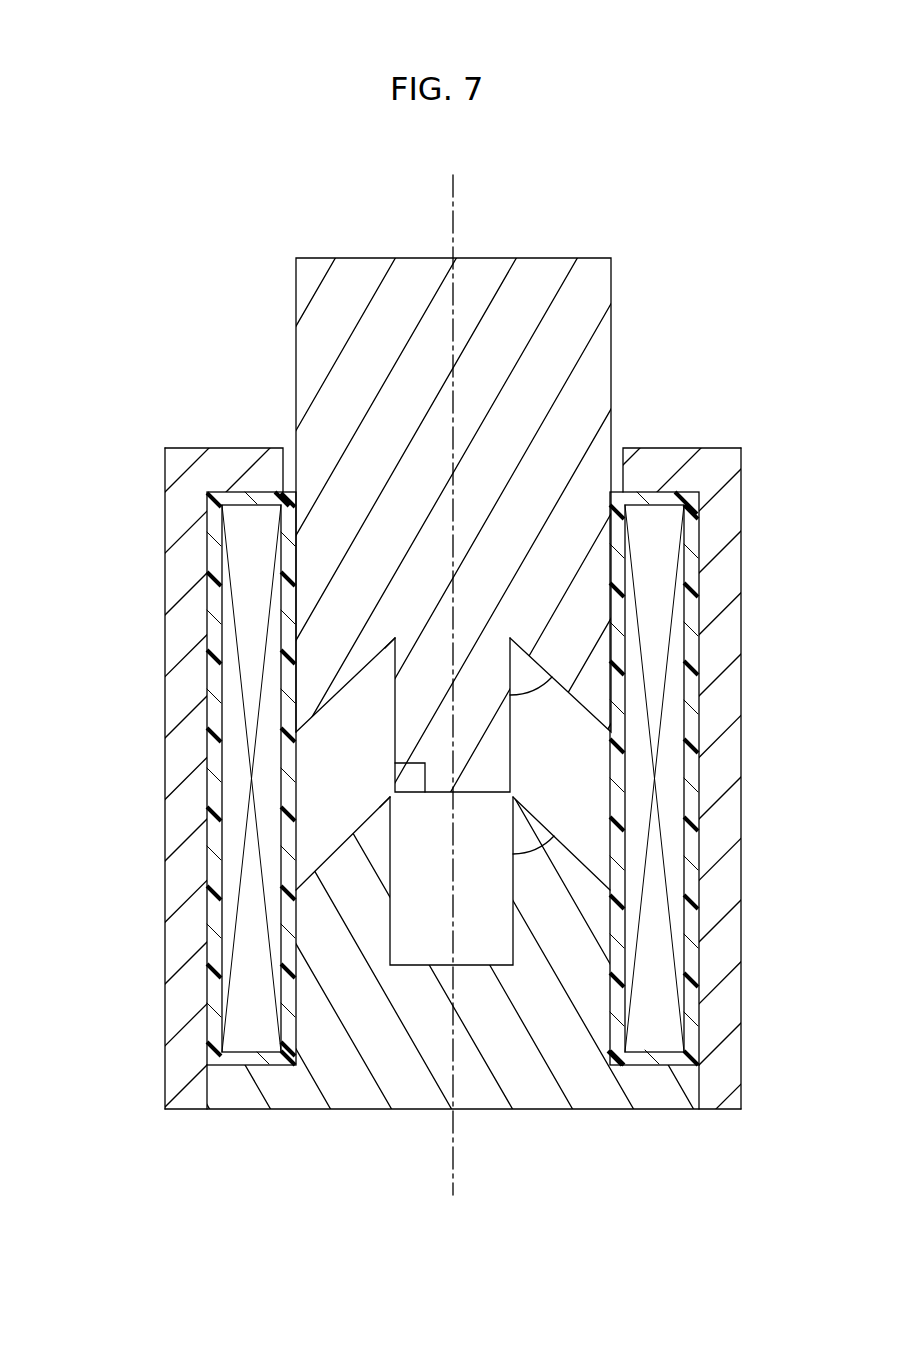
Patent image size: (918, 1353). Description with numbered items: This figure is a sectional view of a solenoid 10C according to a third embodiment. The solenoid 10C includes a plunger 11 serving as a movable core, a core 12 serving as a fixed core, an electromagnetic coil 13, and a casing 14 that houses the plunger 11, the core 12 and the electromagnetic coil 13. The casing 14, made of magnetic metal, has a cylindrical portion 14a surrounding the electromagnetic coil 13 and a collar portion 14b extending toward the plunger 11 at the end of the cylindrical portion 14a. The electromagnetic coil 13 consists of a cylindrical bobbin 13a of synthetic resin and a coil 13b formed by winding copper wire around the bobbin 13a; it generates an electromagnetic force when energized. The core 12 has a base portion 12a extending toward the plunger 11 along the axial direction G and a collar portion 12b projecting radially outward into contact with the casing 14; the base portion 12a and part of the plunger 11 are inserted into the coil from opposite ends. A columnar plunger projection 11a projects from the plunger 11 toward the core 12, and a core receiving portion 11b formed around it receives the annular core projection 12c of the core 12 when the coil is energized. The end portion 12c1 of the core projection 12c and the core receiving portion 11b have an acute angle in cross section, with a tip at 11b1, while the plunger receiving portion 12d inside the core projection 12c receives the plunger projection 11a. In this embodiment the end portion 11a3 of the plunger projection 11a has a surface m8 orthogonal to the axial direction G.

The solenoid 10C is at (676, 173).
The axial direction G is at (457, 212).
The plunger 11 is at (618, 338).
The plunger projection 11a is at (472, 682).
The end portion of the plunger projection 11a3 is at (485, 767).
The core receiving portion 11b is at (347, 745).
The tip of inclined portion 11b1 is at (365, 672).
The surface m8 is at (480, 793).
The core 12 is at (605, 1121).
The base portion 12a is at (362, 1017).
The collar portion 12b is at (243, 1093).
The core projection 12c is at (350, 877).
The end portion of the core projection 12c1 is at (382, 817).
The plunger receiving portion 12d is at (483, 950).
The electromagnetic coil 13 is at (710, 956).
The bobbin 13a is at (690, 997).
The coil 13b is at (660, 1010).
The casing 14 is at (748, 493).
The cylindrical portion 14a is at (720, 568).
The collar portion 14b is at (657, 467).